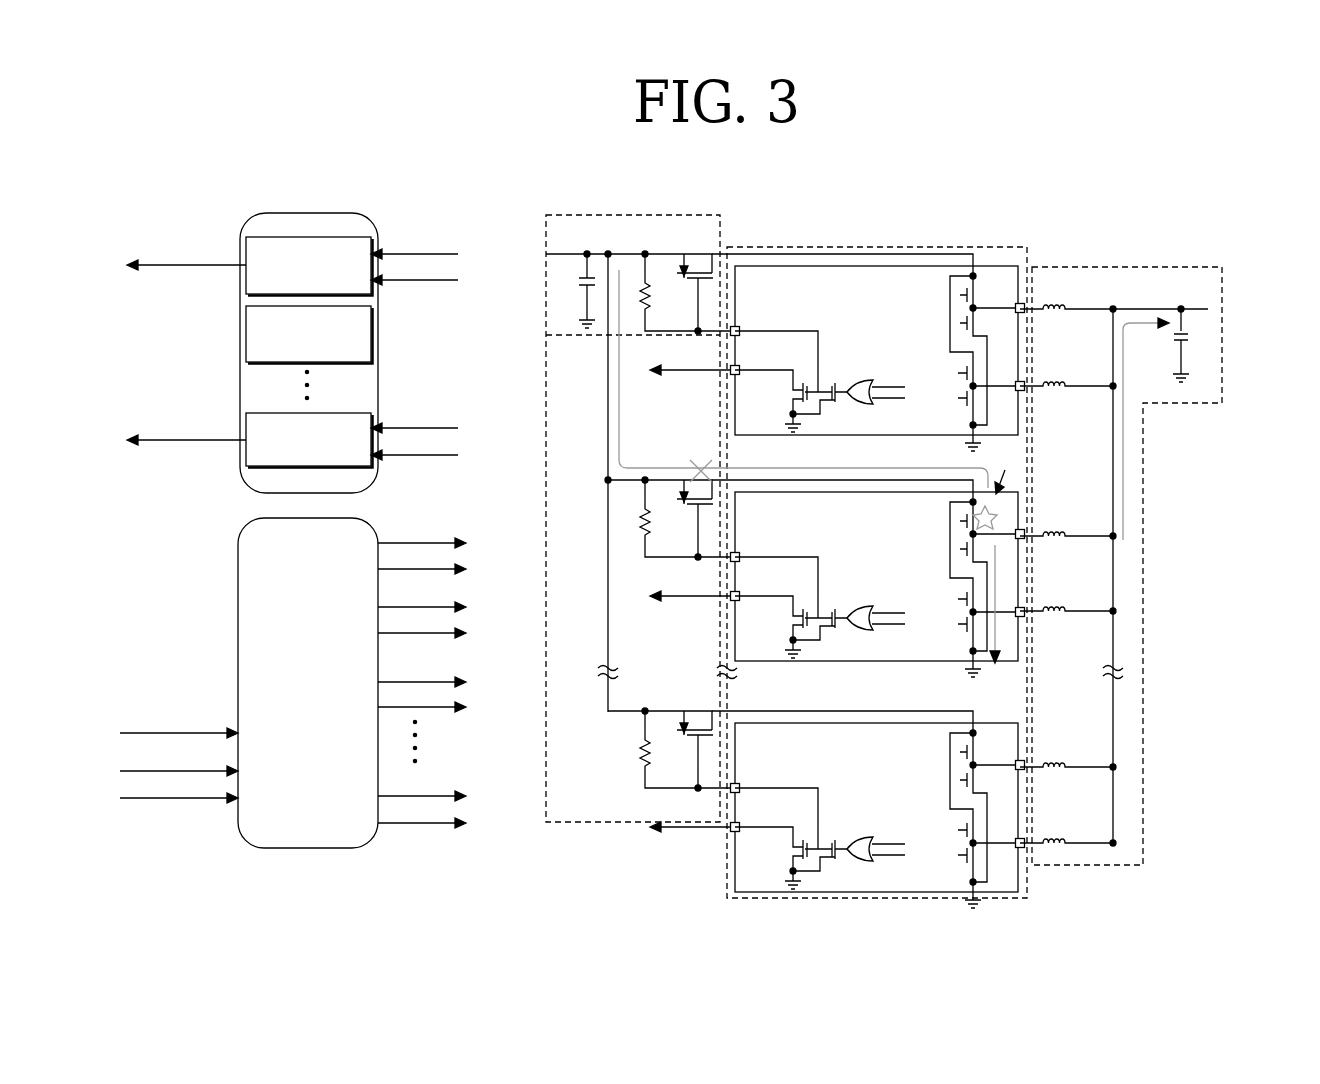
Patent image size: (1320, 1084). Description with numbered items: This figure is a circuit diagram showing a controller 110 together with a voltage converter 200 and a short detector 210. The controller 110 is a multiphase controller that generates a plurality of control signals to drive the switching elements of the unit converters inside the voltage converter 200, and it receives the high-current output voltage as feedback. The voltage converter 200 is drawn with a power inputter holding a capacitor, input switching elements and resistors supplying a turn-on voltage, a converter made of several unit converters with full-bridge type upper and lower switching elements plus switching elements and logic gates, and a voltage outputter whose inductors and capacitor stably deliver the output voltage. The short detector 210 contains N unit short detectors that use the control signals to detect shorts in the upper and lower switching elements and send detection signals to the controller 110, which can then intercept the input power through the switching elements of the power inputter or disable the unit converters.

The controller 110 is at (212, 568).
The short detector 210 is at (386, 209).
The voltage converter 200 is at (986, 238).